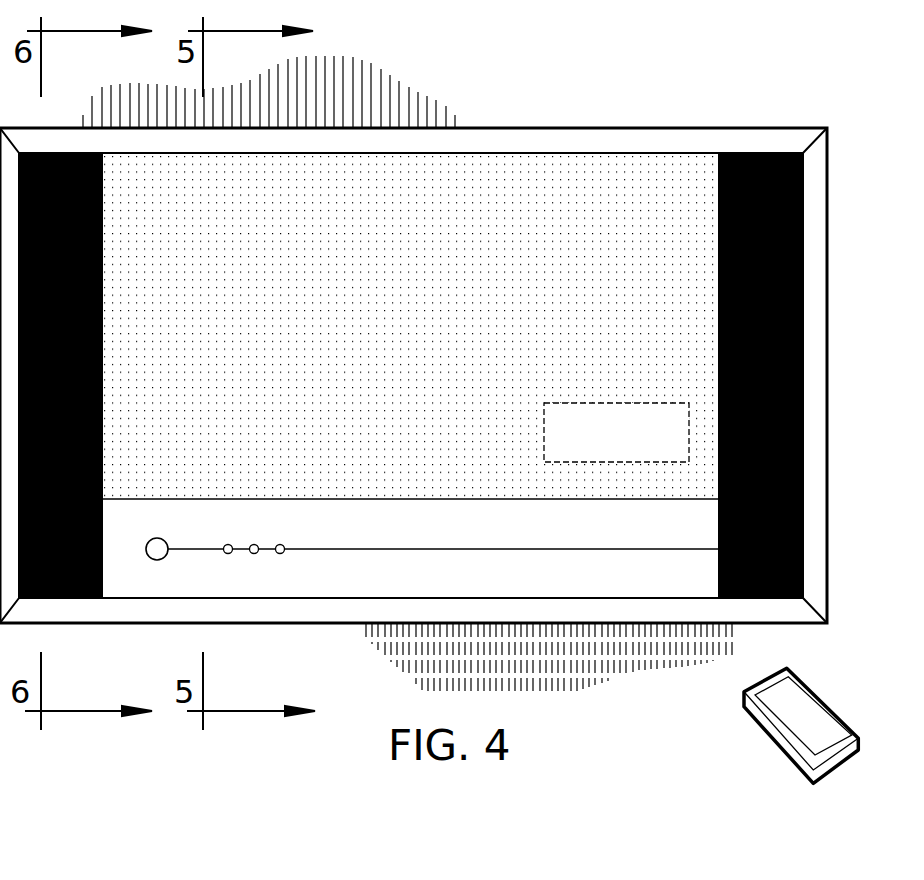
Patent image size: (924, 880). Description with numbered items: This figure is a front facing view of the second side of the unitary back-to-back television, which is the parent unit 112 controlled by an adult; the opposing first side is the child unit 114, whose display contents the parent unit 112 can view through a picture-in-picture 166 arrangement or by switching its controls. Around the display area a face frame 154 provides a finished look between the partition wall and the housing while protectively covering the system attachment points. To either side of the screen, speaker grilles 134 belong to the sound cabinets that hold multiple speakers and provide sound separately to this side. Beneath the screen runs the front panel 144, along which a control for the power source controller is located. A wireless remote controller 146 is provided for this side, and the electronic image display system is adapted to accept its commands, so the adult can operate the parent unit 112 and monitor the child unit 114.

The parent unit 112 is at (550, 185).
The child unit 114 is at (462, 217).
The speaker grille 134 is at (805, 260).
The front panel 144 is at (405, 582).
The remote controller 146 is at (763, 713).
The face frame 154 is at (657, 140).
The picture-in-picture 166 is at (652, 450).